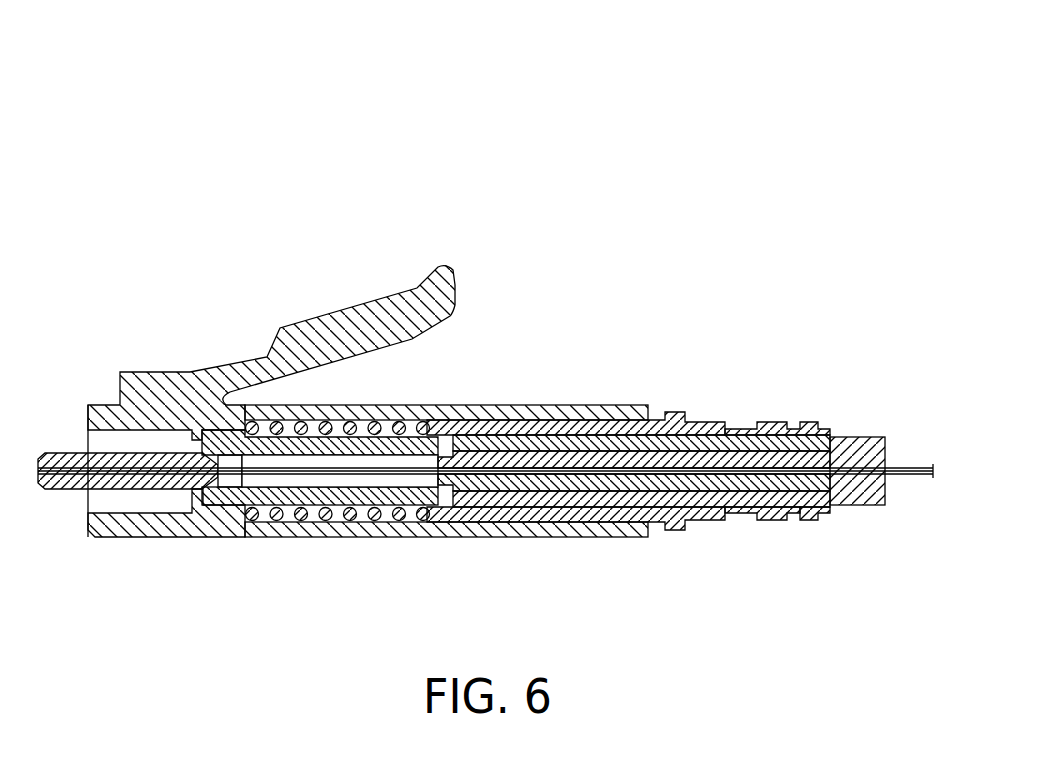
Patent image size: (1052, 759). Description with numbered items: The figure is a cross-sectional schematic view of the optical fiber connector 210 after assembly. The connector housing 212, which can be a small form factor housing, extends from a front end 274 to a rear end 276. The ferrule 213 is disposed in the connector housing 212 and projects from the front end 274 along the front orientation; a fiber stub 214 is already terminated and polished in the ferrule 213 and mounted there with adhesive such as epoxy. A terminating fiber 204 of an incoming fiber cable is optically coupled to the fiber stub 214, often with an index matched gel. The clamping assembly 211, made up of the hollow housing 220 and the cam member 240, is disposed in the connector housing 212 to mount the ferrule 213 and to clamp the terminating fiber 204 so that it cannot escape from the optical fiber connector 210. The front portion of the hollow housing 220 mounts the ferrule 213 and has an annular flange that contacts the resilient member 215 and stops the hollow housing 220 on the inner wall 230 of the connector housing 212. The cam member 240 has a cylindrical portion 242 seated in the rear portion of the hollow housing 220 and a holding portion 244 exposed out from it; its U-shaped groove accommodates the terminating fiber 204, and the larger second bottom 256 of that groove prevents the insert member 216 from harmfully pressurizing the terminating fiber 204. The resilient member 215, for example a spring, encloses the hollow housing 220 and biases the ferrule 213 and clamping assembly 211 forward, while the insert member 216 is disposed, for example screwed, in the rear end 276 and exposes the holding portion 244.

The optical fiber connector 210 is at (137, 57).
The ferrule 213 is at (62, 453).
The front end 274 is at (102, 404).
The inner wall 230 is at (186, 440).
The resilient member 215 is at (378, 430).
The connector housing 212 is at (118, 522).
The fiber stub 214 is at (176, 478).
The rear end 276 is at (617, 538).
The clamping assembly 211 is at (715, 300).
The hollow housing 220 is at (543, 443).
The cam member 240 is at (747, 440).
The insert member 216 is at (763, 457).
The cylindrical portion 242 is at (727, 512).
The terminating fiber 204 is at (818, 495).
The second bottom 256 is at (838, 437).
The holding portion 244 is at (863, 505).